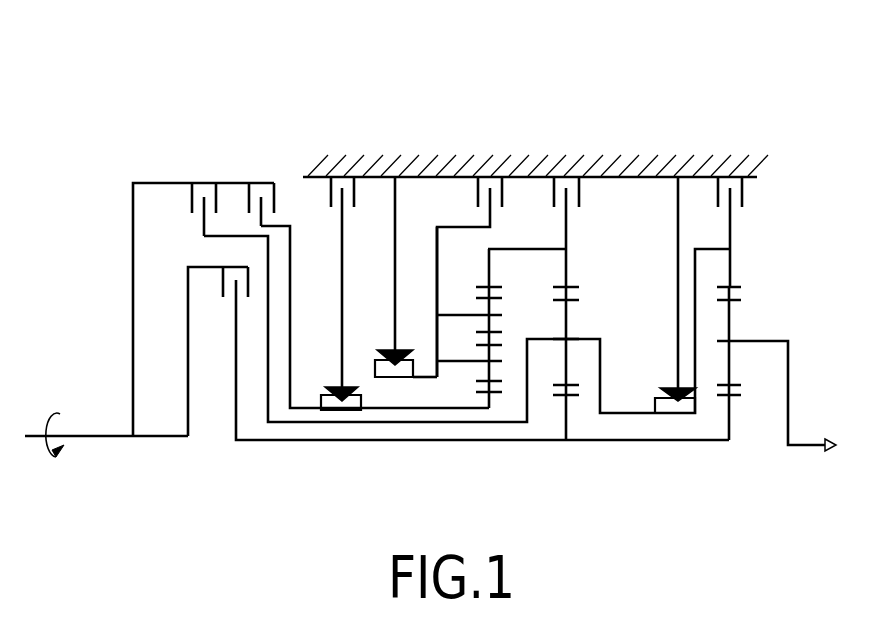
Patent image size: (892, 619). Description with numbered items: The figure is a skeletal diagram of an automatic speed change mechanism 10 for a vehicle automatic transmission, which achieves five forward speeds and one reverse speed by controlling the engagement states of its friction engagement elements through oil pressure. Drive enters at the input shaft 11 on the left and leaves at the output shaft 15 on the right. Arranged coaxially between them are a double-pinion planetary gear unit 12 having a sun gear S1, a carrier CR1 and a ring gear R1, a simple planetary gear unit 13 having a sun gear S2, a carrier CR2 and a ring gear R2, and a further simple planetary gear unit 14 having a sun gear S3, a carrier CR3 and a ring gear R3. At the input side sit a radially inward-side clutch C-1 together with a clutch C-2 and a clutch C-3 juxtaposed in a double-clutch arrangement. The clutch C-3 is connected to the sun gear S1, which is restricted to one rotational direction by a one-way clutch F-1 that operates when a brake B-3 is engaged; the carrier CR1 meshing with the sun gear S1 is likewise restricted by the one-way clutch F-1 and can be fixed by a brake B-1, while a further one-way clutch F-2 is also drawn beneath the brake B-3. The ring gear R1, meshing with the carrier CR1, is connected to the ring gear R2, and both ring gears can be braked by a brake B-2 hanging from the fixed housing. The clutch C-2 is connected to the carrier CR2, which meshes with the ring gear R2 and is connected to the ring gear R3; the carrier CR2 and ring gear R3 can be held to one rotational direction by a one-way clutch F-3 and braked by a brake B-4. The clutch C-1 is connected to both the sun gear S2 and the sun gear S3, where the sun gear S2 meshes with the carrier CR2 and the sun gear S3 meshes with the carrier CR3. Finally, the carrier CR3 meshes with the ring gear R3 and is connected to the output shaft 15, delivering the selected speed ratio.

The automatic speed change mechanism 10 is at (249, 90).
The input shaft 11 is at (101, 436).
The double-pinion planetary gear unit 12 is at (497, 244).
The simple planetary gear unit 13 is at (575, 244).
The simple planetary gear unit 14 is at (739, 244).
The output shaft 15 is at (801, 443).
The clutch C-1 is at (230, 269).
The clutch C-2 is at (198, 195).
The clutch C-3 is at (257, 190).
The brake B-1 is at (469, 252).
The brake B-2 is at (562, 207).
The brake B-3 is at (339, 257).
The brake B-4 is at (726, 207).
The one-way clutch F-1 is at (405, 293).
The one-way clutch F-2 is at (328, 381).
The one-way clutch F-3 is at (675, 310).
The ring gear R1 is at (497, 289).
The ring gear R2 is at (572, 289).
The ring gear R3 is at (738, 289).
The sun gear S1 is at (480, 397).
The sun gear S2 is at (572, 397).
The sun gear S3 is at (737, 397).
The carrier CR1 is at (403, 348).
The carrier CR2 is at (584, 339).
The carrier CR3 is at (757, 341).